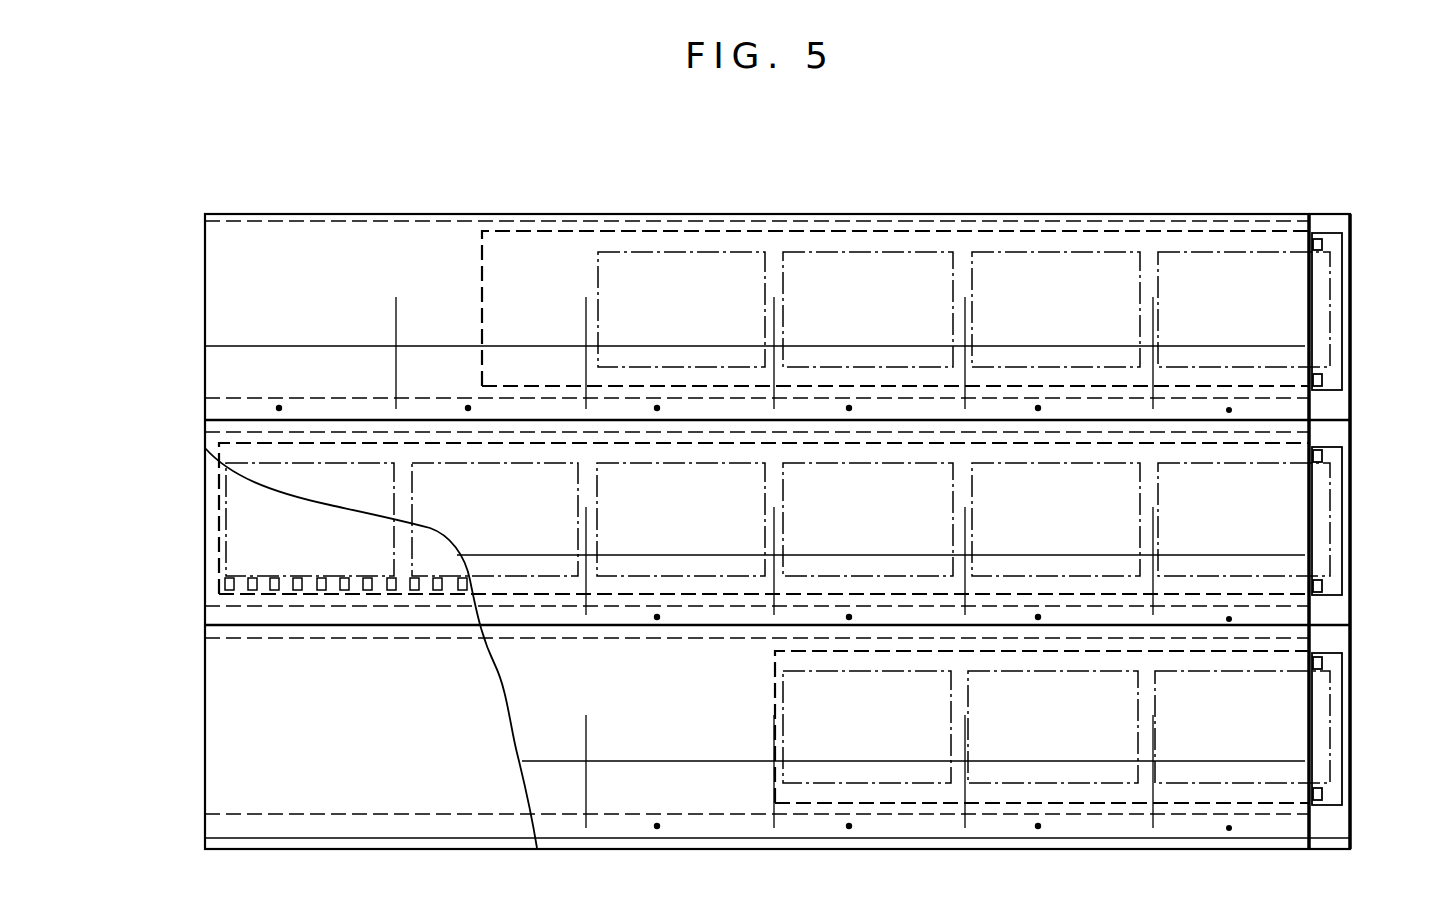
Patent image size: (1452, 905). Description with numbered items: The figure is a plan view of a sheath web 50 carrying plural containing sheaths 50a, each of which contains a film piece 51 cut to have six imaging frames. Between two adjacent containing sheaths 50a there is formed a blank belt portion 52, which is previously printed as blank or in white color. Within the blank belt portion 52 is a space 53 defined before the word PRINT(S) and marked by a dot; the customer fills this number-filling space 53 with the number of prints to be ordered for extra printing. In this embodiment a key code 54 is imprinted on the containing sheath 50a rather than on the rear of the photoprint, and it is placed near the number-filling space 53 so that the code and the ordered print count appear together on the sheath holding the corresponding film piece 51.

The sheath web 50 is at (934, 180).
The containing sheath 50a is at (1310, 229).
The film piece 51 is at (1335, 310).
The blank belt portion 52 is at (220, 373).
The number-filling space 53 is at (293, 404).
The key code 54 is at (715, 357).